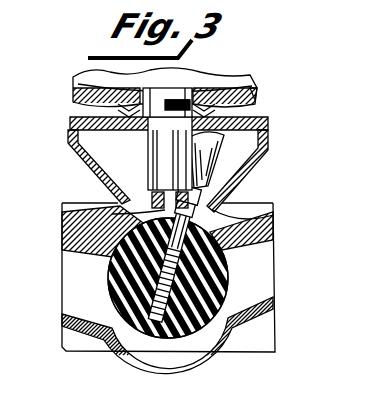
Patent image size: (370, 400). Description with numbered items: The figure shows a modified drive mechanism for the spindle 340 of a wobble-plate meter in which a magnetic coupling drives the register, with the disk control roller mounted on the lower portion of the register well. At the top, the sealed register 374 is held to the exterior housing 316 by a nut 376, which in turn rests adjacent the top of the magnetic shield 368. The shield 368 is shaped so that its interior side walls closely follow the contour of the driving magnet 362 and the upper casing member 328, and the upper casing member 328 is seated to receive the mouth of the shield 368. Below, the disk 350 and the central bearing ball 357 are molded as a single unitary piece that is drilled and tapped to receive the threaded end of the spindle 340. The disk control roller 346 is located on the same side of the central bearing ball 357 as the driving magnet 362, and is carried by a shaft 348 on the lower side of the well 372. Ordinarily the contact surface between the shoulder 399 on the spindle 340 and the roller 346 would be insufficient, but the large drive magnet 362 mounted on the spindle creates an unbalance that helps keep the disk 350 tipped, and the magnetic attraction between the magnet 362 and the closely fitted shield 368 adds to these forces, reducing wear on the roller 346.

The sealed register 374 is at (238, 78).
The exterior housing 316 is at (256, 100).
The nut 376 is at (245, 113).
The magnetic shield 368 is at (268, 125).
The well 372 is at (150, 153).
The disk control roller 346 is at (152, 198).
The shaft 348 is at (122, 213).
The driving magnet 362 is at (242, 160).
The shoulder 399 is at (228, 198).
The upper casing member 328 is at (262, 226).
The spindle 340 is at (222, 257).
The central bearing ball 357 is at (222, 285).
The disk 350 is at (270, 313).